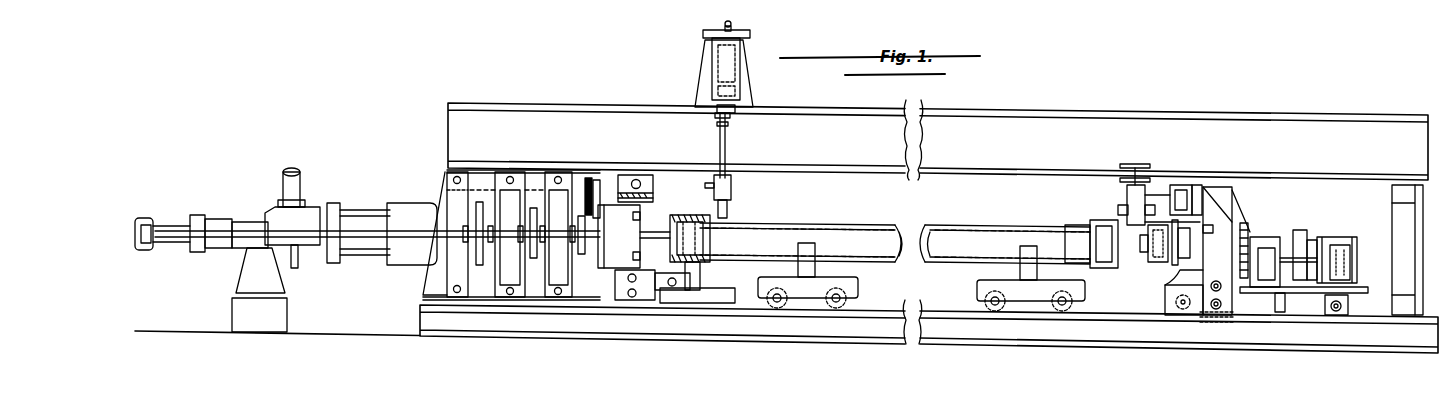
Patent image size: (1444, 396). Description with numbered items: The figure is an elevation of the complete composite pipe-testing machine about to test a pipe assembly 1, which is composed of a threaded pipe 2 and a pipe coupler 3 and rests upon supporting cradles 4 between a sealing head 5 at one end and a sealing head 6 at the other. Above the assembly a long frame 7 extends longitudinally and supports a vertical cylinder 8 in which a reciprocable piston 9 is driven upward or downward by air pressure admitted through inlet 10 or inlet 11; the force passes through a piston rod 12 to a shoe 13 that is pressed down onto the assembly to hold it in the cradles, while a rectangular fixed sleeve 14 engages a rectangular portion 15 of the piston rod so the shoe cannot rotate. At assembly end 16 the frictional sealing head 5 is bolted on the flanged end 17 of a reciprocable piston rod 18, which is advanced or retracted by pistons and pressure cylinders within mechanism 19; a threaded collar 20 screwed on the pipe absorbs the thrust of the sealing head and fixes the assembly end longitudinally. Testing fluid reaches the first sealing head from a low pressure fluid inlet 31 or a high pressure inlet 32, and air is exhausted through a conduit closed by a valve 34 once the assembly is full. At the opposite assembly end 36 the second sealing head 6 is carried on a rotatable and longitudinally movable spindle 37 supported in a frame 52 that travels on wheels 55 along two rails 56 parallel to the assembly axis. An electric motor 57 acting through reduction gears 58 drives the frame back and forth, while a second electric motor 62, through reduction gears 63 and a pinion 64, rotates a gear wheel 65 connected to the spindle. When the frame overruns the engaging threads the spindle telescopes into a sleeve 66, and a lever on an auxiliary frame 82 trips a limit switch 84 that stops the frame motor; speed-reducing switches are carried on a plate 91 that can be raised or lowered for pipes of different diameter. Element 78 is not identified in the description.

The pipe assembly 1 is at (884, 268).
The threaded pipe 2 is at (956, 263).
The pipe coupler 3 is at (1100, 268).
The supporting cradles 4 is at (813, 288).
The sealing head 5 is at (650, 248).
The sealing head 6 is at (1175, 262).
The long frame 7 is at (900, 106).
The vertical cylinder 8 is at (700, 56).
The reciprocable piston 9 is at (700, 66).
The inlet 10 is at (722, 28).
The inlet 11 is at (710, 92).
The piston rod 12 is at (725, 136).
The shoe 13 is at (728, 206).
The rectangular fixed sleeve 14 is at (730, 180).
The rectangular portion 15 is at (732, 192).
The assembly end 16 is at (714, 234).
The flanged end 17 is at (625, 240).
The reciprocable piston rod 18 is at (586, 252).
The mechanism 19 is at (415, 223).
The threaded collar 20 is at (690, 215).
The low pressure fluid inlet 31 is at (287, 192).
The high pressure inlet 32 is at (300, 265).
The valve 34 is at (576, 170).
The assembly end 36 is at (1155, 262).
The spindle 37 is at (1170, 287).
The frame 52 is at (1213, 220).
The wheels 55 is at (1360, 294).
The rails 56 is at (927, 310).
The electric motor 57 is at (1258, 292).
The reduction gears 58 is at (1350, 238).
The electric motor 62 is at (1338, 245).
The reduction gears 63 is at (1276, 254).
The pinion 64 is at (1247, 246).
The gear wheel 65 is at (1244, 222).
The sleeve 66 is at (1264, 238).
The rod 78 is at (1304, 240).
The auxiliary frame 82 is at (1176, 185).
The limit switch 84 is at (1196, 185).
The plate 91 is at (1118, 198).